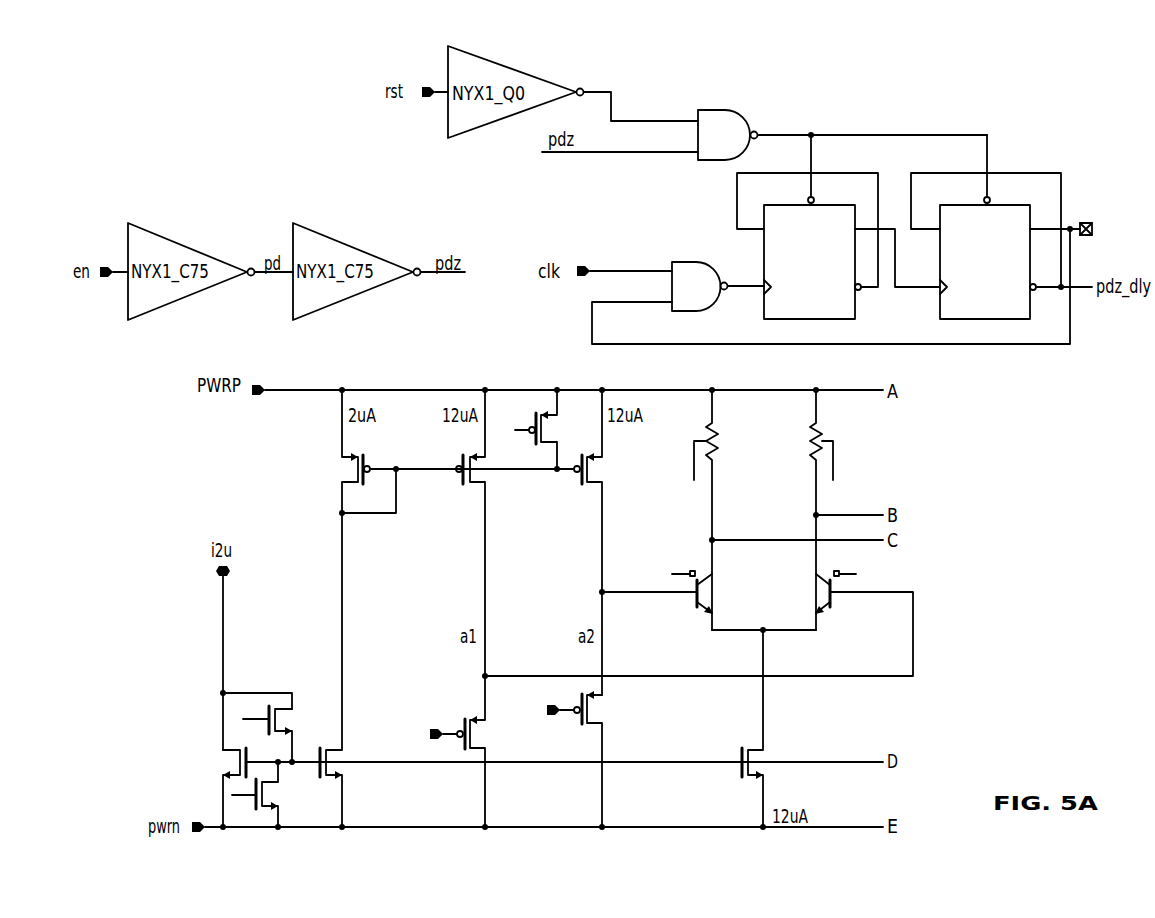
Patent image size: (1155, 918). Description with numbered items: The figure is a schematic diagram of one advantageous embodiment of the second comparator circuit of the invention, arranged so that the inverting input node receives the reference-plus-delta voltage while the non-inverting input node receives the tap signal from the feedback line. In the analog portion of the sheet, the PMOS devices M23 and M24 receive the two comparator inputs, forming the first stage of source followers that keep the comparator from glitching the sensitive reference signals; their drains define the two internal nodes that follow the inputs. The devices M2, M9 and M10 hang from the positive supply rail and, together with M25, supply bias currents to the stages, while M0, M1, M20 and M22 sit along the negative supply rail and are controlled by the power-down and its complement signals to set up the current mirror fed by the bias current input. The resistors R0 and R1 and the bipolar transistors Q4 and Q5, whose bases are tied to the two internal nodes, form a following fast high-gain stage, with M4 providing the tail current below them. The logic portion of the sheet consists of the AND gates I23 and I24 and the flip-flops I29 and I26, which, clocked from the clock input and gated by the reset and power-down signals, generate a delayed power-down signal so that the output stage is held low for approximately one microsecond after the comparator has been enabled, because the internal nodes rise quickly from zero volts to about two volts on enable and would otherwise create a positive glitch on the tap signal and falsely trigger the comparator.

The AND gate I23 is at (728, 124).
The AND gate I24 is at (700, 274).
The D flip-flop I29 is at (813, 249).
The D flip-flop I26 is at (988, 249).
The NMOS transistor M0 is at (343, 670).
The NMOS transistor M1 is at (261, 787).
The PMOS transistor M2 is at (345, 451).
The NMOS transistor M4 is at (765, 728).
The PMOS transistor M9 is at (484, 533).
The PMOS transistor M10 is at (601, 542).
The NMOS transistor M20 is at (275, 729).
The NMOS transistor M22 is at (270, 794).
The PMOS transistor M23 is at (471, 751).
The PMOS transistor M24 is at (589, 752).
The PMOS transistor M25 is at (542, 429).
The bipolar transistor Q4 is at (666, 588).
The bipolar transistor Q5 is at (699, 619).
The resistor RPHRES R0 is at (736, 510).
The resistor RPHRES R1 is at (867, 510).